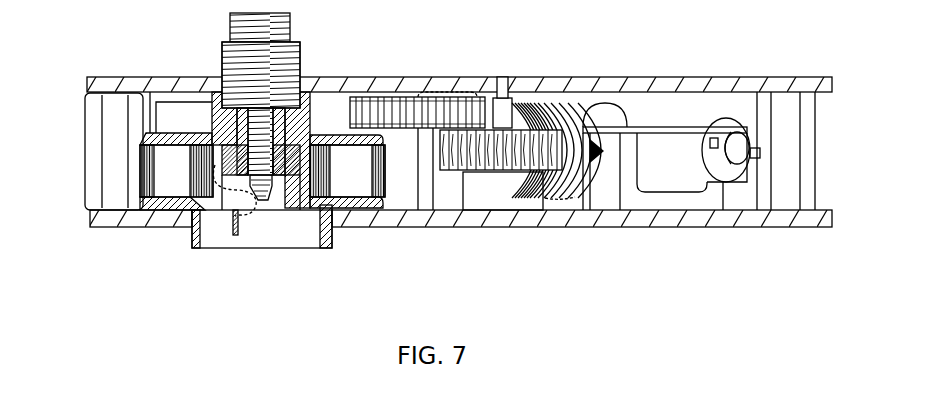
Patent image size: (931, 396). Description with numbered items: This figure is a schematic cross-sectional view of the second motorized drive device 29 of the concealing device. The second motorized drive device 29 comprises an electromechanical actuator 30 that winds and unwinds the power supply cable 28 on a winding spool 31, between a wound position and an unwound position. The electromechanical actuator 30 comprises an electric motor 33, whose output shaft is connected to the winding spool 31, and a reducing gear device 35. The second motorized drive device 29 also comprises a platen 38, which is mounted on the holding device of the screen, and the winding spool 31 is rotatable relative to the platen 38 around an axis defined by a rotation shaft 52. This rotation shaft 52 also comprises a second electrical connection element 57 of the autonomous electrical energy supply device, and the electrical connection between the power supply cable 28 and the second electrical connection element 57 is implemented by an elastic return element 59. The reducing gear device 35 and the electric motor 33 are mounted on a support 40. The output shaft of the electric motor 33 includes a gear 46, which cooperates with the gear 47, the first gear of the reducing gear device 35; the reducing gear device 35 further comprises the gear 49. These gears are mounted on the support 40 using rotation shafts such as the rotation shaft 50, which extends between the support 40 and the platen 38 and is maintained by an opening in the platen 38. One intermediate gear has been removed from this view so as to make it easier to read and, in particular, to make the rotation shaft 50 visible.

The power supply cable 28 is at (140, 172).
The second motorized drive device 29 is at (450, 216).
The electromechanical actuator 30 is at (605, 81).
The winding spool 31 is at (165, 140).
The electric motor 33 is at (678, 140).
The reducing gear device 35 is at (447, 105).
The platen 38 is at (331, 86).
The support 40 is at (412, 215).
The gear 46 is at (545, 110).
The gear 47 is at (447, 168).
The gear 49 is at (397, 110).
The rotation shaft 50 is at (505, 107).
The rotation shaft 52 is at (258, 140).
The second electrical connection element 57 is at (265, 204).
The elastic return element 59 is at (232, 216).